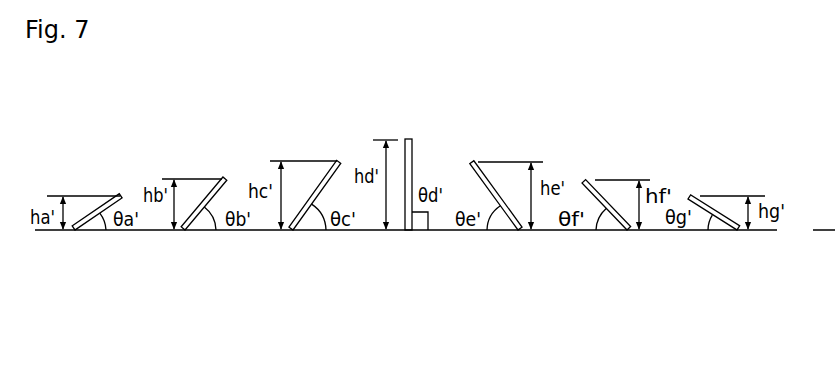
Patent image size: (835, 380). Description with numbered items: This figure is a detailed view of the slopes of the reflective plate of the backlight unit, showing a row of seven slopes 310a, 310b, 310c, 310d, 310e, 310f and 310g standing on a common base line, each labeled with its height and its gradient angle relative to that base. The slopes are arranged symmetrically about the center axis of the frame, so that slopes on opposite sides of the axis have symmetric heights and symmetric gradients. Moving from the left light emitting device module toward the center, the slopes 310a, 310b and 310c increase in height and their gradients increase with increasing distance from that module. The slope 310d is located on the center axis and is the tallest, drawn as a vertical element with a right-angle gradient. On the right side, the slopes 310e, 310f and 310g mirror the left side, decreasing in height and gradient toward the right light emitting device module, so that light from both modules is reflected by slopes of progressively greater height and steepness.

The slope 310a is at (92, 230).
The slope 310b is at (205, 230).
The slope 310c is at (317, 230).
The slope 310d is at (397, 230).
The slope 310e is at (492, 230).
The slope 310f is at (602, 230).
The slope 310g is at (713, 230).